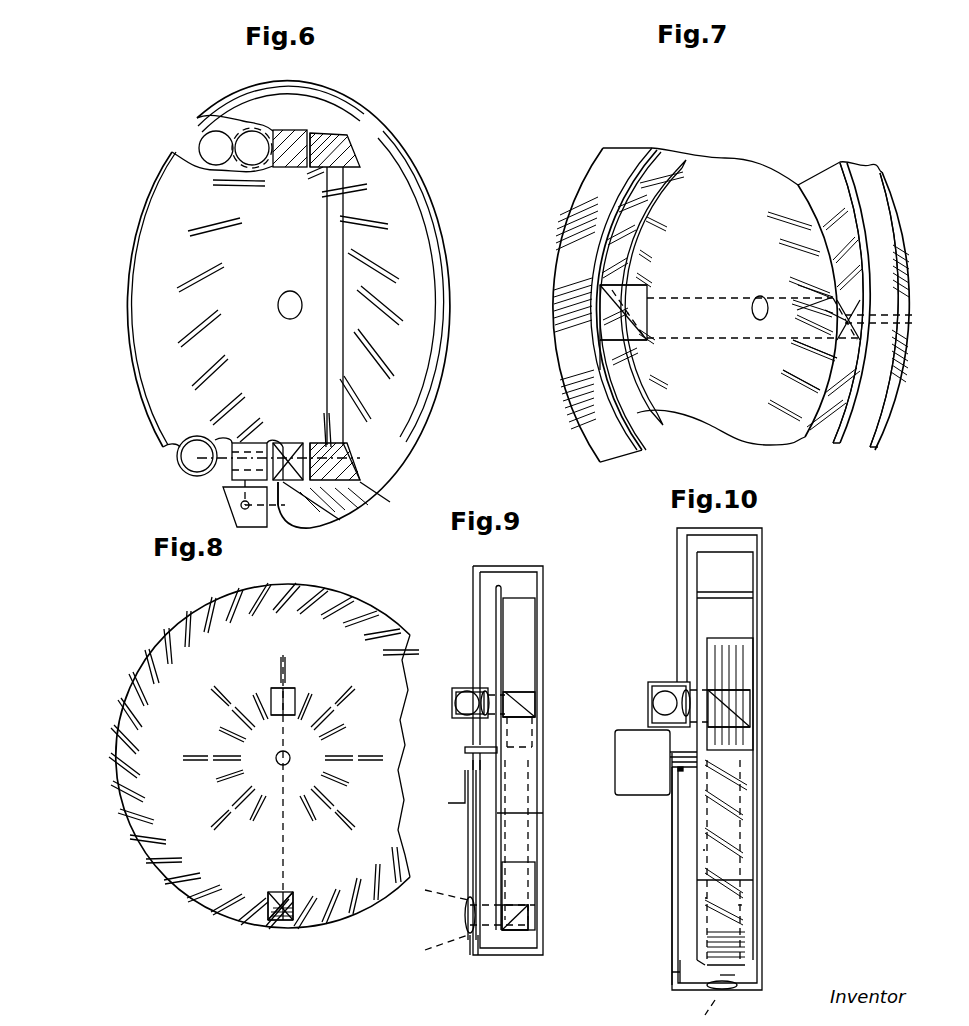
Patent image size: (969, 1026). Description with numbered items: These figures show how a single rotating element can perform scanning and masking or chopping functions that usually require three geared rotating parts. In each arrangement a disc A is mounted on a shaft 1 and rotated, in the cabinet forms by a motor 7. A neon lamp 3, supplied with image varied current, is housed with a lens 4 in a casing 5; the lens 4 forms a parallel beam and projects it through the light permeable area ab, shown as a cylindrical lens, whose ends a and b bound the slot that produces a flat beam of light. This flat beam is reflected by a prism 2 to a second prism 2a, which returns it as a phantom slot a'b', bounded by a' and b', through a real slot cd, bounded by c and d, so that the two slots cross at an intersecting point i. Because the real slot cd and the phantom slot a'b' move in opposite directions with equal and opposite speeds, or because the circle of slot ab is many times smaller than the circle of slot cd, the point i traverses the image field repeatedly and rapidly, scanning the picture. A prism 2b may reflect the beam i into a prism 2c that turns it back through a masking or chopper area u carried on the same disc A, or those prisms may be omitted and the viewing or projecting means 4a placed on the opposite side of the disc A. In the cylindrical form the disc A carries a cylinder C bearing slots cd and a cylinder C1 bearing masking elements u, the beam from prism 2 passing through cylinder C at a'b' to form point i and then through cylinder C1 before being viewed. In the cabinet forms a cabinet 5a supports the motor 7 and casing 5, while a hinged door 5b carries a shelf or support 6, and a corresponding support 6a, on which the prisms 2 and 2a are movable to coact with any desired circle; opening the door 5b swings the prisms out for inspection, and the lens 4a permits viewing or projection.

In FIG. 6, the shaft 1 is at (288, 316).
In FIG. 7, the shaft 1 is at (757, 320).
In FIG. 8, the shaft 1 is at (276, 758).
In FIG. 9, the shaft 1 is at (490, 752).
In FIG. 10, the shaft 1 is at (672, 768).
In FIG. 6, the prism 2 is at (352, 150).
In FIG. 7, the prism 2 is at (600, 300).
In FIG. 8, the prism 2 is at (296, 690).
In FIG. 9, the prism 2 is at (517, 705).
In FIG. 10, the prism 2 is at (722, 708).
In FIG. 6, the prism 2a is at (362, 453).
In FIG. 8, the prism 2a is at (284, 922).
In FIG. 9, the prism 2a is at (518, 907).
In FIG. 6, the prism 2b is at (235, 478).
In FIG. 6, the prism 2c is at (247, 527).
In FIG. 6, the neon lamp 3 is at (205, 143).
In FIG. 9, the neon lamp 3 is at (460, 700).
In FIG. 10, the neon lamp 3 is at (655, 703).
In FIG. 6, the lens 4 is at (250, 133).
In FIG. 9, the lens 4 is at (483, 699).
In FIG. 10, the lens 4 is at (684, 697).
In FIG. 6, the viewing or projecting lens 4a is at (183, 468).
In FIG. 9, the viewing or projecting lens 4a is at (465, 915).
In FIG. 10, the viewing or projecting lens 4a is at (725, 1000).
In FIG. 9, the casing 5 is at (452, 710).
In FIG. 10, the casing 5 is at (650, 685).
In FIG. 9, the cabinet 5a is at (470, 953).
In FIG. 10, the cabinet 5a is at (672, 972).
In FIG. 9, the door 5b is at (543, 612).
In FIG. 10, the door 5b is at (757, 835).
In FIG. 9, the shelf or support 6 is at (530, 634).
In FIG. 10, the shelf or support 6 is at (748, 660).
In FIG. 9, the prism holder 6a is at (538, 845).
In FIG. 9, the motor 7 is at (452, 803).
In FIG. 10, the motor 7 is at (623, 790).
In FIG. 6, the disc A is at (437, 228).
In FIG. 7, the disc A is at (735, 305).
In FIG. 8, the disc A is at (264, 756).
In FIG. 9, the disc A is at (546, 813).
In FIG. 10, the disc A is at (697, 880).
In FIG. 7, the cylinder C is at (812, 445).
In FIG. 10, the cylinder C is at (745, 925).
In FIG. 7, the cylinder C1 is at (870, 447).
In FIG. 10, the cylinder C1 is at (740, 968).
In FIG. 6, the light permeable area end a is at (290, 104).
In FIG. 7, the light permeable area end a is at (576, 312).
In FIG. 8, the light permeable area end a is at (288, 675).
In FIG. 9, the light permeable area end a is at (534, 673).
In FIG. 10, the light permeable area end a is at (717, 756).
In FIG. 6, the phantom slot end a' is at (294, 445).
In FIG. 7, the phantom slot end a' is at (828, 298).
In FIG. 8, the phantom slot end a' is at (260, 920).
In FIG. 9, the phantom slot end a' is at (514, 957).
In FIG. 10, the phantom slot end a' is at (678, 900).
In FIG. 6, the light permeable area end b is at (351, 124).
In FIG. 7, the light permeable area end b is at (590, 359).
In FIG. 8, the light permeable area end b is at (291, 732).
In FIG. 9, the light permeable area end b is at (534, 729).
In FIG. 10, the light permeable area end b is at (751, 733).
In FIG. 6, the phantom slot end b' is at (352, 488).
In FIG. 7, the phantom slot end b' is at (804, 370).
In FIG. 8, the phantom slot end b' is at (314, 923).
In FIG. 9, the phantom slot end b' is at (563, 899).
In FIG. 10, the phantom slot end b' is at (761, 900).
In FIG. 6, the slot end c is at (320, 477).
In FIG. 7, the slot end c is at (830, 330).
In FIG. 8, the slot end c is at (273, 922).
In FIG. 6, the slot end d is at (350, 465).
In FIG. 7, the slot end d is at (830, 300).
In FIG. 8, the slot end d is at (293, 900).
In FIG. 6, the intersecting point i is at (285, 482).
In FIG. 7, the intersecting point i is at (825, 310).
In FIG. 8, the intersecting point i is at (287, 920).
In FIG. 10, the intersecting point i is at (735, 985).
In FIG. 6, the masking or chopper area u is at (303, 530).
In FIG. 7, the masking or chopper area u is at (590, 373).
In FIG. 10, the masking or chopper area u is at (700, 965).